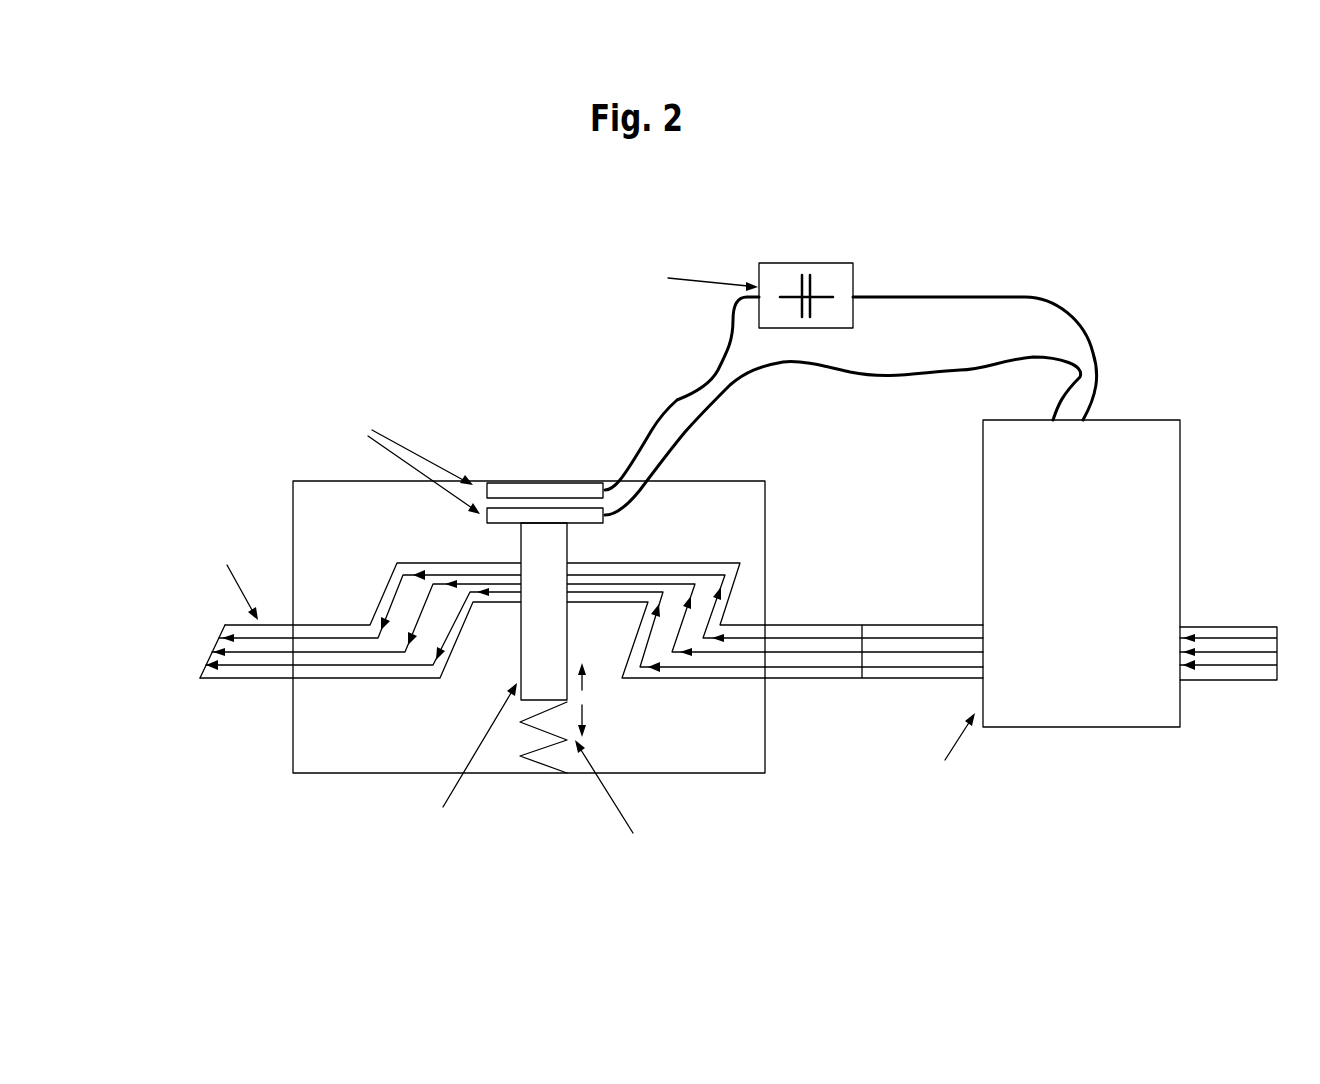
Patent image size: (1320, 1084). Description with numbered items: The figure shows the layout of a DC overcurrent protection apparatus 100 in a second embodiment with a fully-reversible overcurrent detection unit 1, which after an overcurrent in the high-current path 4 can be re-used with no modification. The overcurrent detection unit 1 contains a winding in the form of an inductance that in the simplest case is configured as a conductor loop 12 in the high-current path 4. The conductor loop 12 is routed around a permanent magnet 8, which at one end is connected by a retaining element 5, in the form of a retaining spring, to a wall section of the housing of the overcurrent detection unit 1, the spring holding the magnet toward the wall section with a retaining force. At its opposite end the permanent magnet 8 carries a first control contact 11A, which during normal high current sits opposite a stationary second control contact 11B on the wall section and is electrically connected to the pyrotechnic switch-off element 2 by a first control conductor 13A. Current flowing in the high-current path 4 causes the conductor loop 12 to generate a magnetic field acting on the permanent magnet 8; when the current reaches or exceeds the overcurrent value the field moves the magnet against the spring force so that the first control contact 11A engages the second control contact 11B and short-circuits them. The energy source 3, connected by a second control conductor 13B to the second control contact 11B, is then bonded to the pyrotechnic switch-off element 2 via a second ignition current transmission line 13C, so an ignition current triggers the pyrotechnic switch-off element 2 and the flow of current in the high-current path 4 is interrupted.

The DC overcurrent protection apparatus 100 is at (445, 312).
The overcurrent detection unit 1 is at (735, 735).
The pyrotechnic switch-off element 2 is at (1090, 589).
The energy source 3 is at (782, 280).
The high-current path 4 is at (897, 625).
The retaining element 5 is at (567, 740).
The permanent magnet 8 is at (542, 655).
The first control contact 11A is at (597, 517).
The second control contact 11B is at (485, 492).
The conductor loop 12 is at (612, 588).
The first control conductor 13A is at (897, 380).
The second control conductor 13B is at (672, 402).
The second ignition current transmission line 13C is at (967, 292).